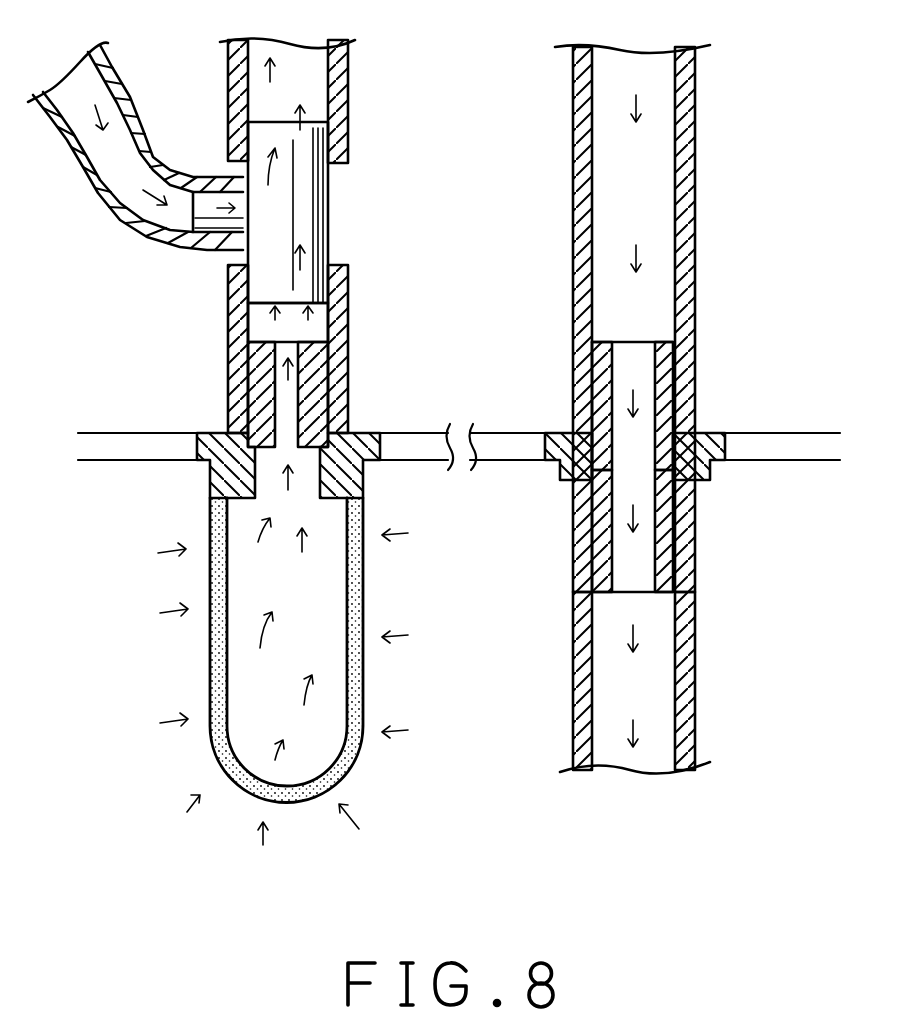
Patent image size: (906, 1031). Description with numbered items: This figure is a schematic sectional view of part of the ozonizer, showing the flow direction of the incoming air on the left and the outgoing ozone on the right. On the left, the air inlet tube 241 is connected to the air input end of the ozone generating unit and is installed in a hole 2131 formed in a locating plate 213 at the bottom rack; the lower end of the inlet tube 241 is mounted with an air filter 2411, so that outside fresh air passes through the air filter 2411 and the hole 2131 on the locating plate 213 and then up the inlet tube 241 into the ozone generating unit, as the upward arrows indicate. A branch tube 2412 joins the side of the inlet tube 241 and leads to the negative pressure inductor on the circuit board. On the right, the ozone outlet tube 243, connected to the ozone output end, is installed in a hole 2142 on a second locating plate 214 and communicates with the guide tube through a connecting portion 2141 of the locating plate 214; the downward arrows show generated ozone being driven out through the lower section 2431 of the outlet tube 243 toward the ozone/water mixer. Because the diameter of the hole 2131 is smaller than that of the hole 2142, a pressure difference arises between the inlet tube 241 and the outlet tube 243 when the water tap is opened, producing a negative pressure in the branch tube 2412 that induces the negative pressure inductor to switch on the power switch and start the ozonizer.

The air inlet tube 241 is at (335, 120).
The branch tube 2412 is at (130, 222).
The hole 2131 is at (287, 400).
The locating plate 213 is at (203, 452).
The air filter 2411 is at (223, 637).
The ozone outlet tube 243 is at (687, 240).
The lower tube section 2431 is at (680, 675).
The hole 2142 is at (640, 383).
The connecting portion 2141 is at (660, 545).
The locating plate 214 is at (693, 455).